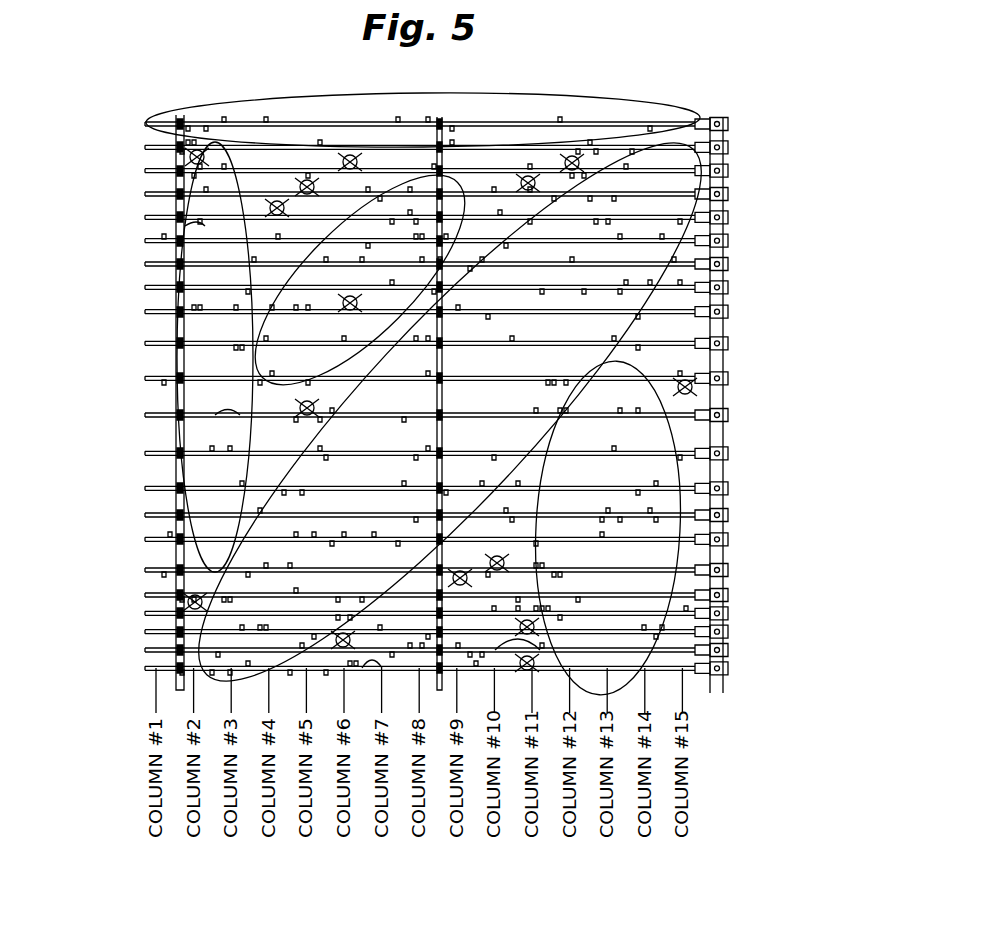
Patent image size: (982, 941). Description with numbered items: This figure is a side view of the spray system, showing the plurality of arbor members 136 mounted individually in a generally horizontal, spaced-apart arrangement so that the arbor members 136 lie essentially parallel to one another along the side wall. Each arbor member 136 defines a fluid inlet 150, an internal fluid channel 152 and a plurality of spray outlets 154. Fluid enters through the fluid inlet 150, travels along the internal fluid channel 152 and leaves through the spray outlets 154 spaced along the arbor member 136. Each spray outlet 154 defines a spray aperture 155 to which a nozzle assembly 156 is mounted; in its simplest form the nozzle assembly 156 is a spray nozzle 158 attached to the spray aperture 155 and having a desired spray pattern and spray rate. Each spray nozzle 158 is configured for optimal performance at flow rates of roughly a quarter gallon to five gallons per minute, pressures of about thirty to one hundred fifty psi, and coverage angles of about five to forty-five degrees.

The arbor member 136 is at (252, 121).
The fluid inlet 150 is at (727, 190).
The internal fluid channel 152 is at (367, 122).
The spray outlet 154 is at (313, 128).
The spray aperture 155 is at (185, 226).
The nozzle assembly 156 is at (472, 668).
The spray nozzle 158 is at (427, 120).